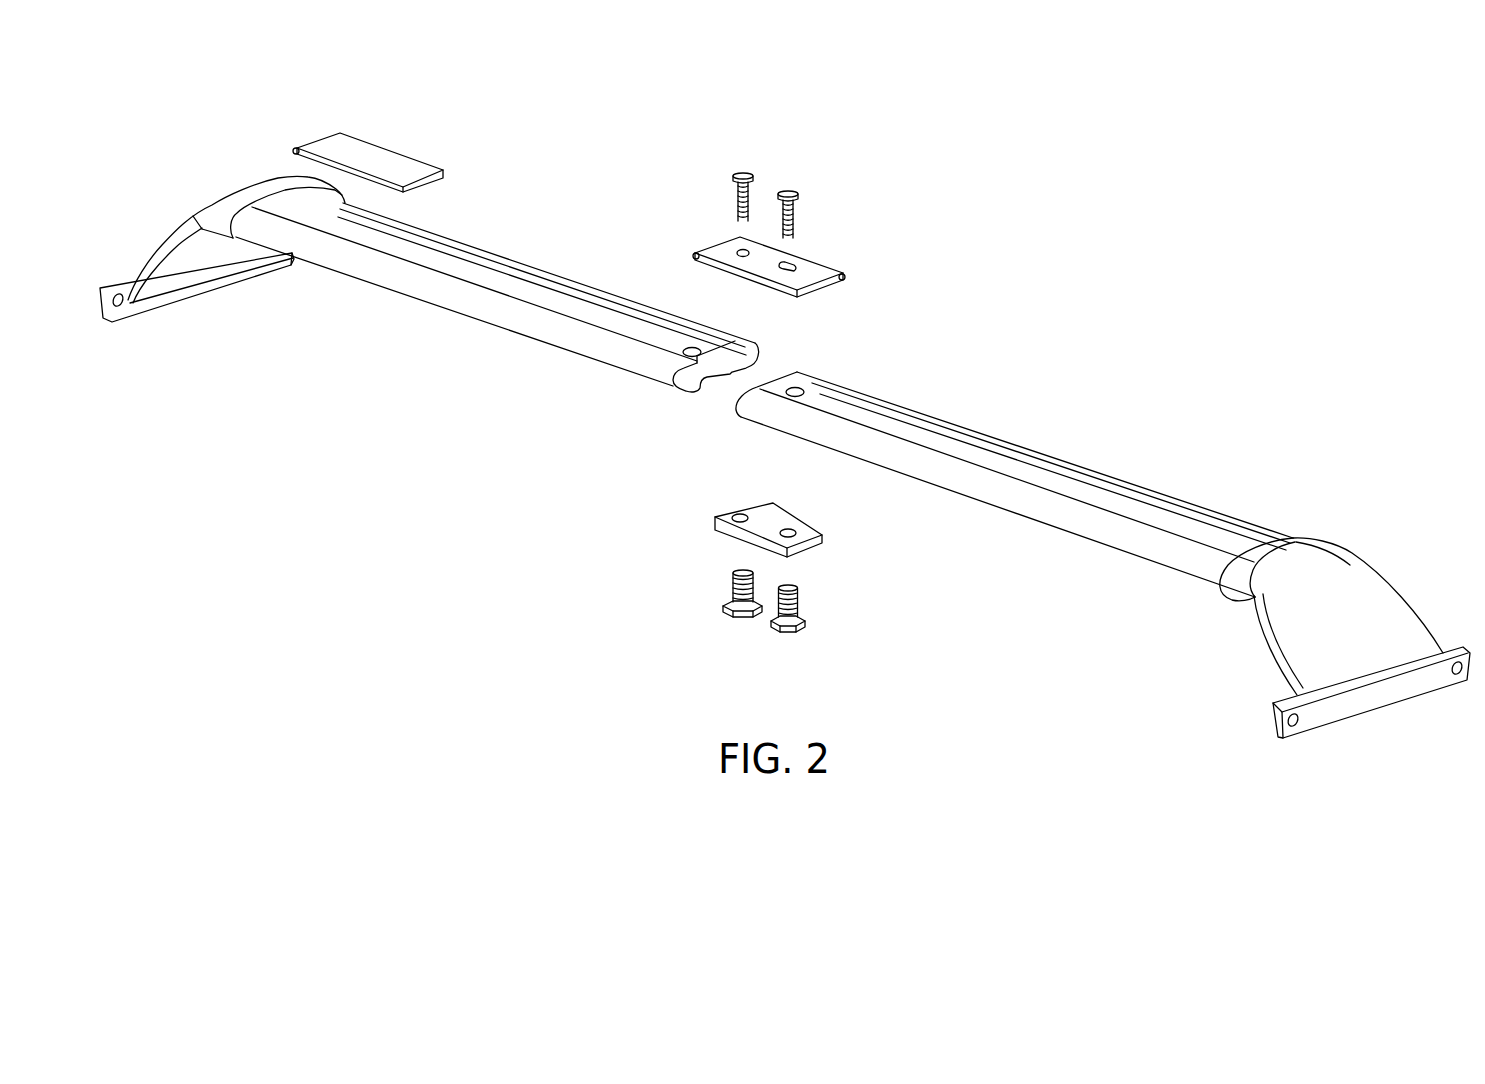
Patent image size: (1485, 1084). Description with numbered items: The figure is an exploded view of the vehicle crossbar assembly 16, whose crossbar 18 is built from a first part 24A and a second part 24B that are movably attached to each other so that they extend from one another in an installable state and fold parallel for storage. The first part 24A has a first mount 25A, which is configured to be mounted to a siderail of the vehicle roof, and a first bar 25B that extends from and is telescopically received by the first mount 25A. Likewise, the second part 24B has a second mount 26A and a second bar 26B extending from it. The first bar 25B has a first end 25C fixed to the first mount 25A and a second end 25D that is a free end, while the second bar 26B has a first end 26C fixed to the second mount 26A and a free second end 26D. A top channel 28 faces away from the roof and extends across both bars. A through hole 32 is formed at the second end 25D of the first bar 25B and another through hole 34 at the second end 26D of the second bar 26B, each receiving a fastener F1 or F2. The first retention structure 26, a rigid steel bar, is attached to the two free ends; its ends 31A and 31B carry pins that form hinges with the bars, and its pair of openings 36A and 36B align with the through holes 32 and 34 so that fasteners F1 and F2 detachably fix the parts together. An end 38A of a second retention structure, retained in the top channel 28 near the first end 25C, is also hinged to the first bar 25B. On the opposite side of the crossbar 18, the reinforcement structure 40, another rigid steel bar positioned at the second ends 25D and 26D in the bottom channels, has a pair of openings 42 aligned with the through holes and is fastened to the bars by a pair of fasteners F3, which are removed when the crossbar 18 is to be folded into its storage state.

The vehicle crossbar assembly 16 is at (1024, 206).
The crossbar 18 is at (947, 301).
The first part 24A is at (516, 198).
The second part 24B is at (1178, 430).
The first mount 25A is at (160, 236).
The first bar 25B is at (477, 321).
The first end 25C is at (221, 243).
The second end 25D is at (693, 396).
The second mount 26A is at (1270, 644).
The second bar 26B is at (967, 497).
The first end 26C is at (1225, 590).
The second end 26D is at (736, 414).
The top channel 28 is at (552, 300).
The through hole 32 is at (691, 346).
The through hole 34 is at (794, 385).
The end of second retention structure 38A is at (329, 137).
The first retention structure 26 is at (777, 153).
The end of first retention structure 31A is at (738, 238).
The end of first retention structure 31B is at (822, 287).
The opening 36A is at (743, 258).
The opening 36B is at (796, 262).
The fastener F1 is at (740, 171).
The fastener F2 is at (789, 190).
The reinforcement structure 40 is at (703, 566).
The openings 42 is at (748, 514).
The fasteners F3 is at (788, 633).